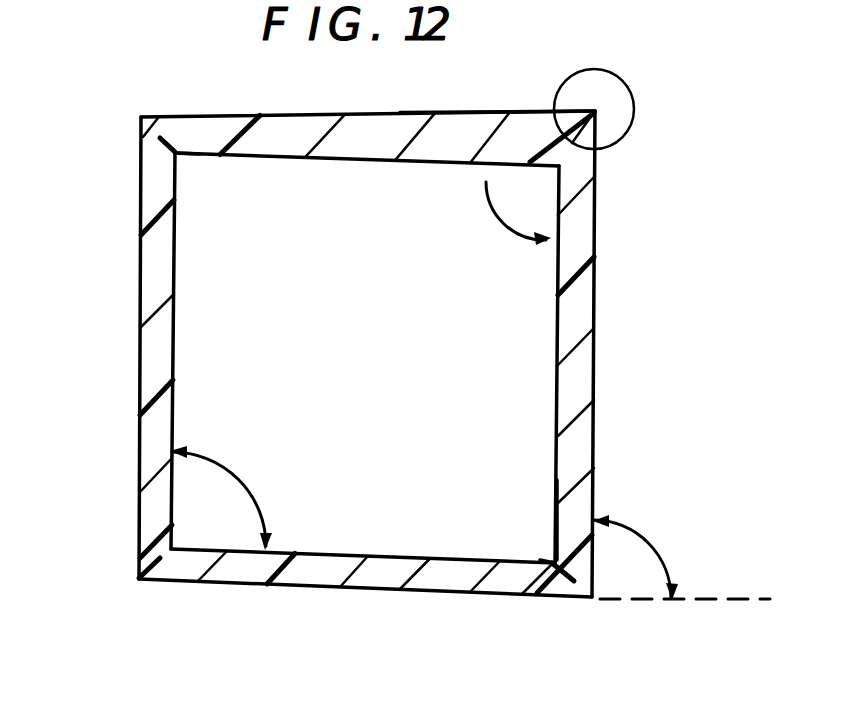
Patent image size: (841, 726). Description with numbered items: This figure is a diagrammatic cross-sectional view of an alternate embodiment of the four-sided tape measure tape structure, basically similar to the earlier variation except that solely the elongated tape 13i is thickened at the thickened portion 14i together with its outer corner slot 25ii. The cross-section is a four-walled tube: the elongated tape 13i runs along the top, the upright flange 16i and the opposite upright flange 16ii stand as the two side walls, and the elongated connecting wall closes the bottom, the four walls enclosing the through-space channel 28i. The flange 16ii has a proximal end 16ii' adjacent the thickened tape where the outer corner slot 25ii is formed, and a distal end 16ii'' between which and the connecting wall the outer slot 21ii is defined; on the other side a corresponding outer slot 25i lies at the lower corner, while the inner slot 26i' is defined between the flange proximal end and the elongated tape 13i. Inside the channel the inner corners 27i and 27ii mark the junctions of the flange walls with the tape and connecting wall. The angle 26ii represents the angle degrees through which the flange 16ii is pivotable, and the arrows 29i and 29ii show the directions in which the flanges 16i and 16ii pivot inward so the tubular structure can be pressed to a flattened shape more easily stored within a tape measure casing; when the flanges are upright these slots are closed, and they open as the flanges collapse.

The elongated tape 13i is at (302, 115).
The thickened portion of the elongated tape 14i is at (528, 111).
The upright flange 16i is at (150, 285).
The upright flange 16ii is at (628, 354).
The flange proximal end 16ii' is at (639, 236).
The flange distal end 16ii'' is at (641, 506).
The outer slot 21ii is at (555, 597).
The outer slot 25i is at (152, 572).
The outer corner slot 25ii is at (585, 142).
The inner slot 26i' is at (110, 154).
The angle 26ii is at (636, 100).
The inner corner 27i is at (182, 182).
The inner corner 27ii is at (514, 552).
The through-space channel 28i is at (300, 353).
The pivot direction arrow 29i is at (248, 482).
The pivot direction arrow 29ii is at (488, 203).